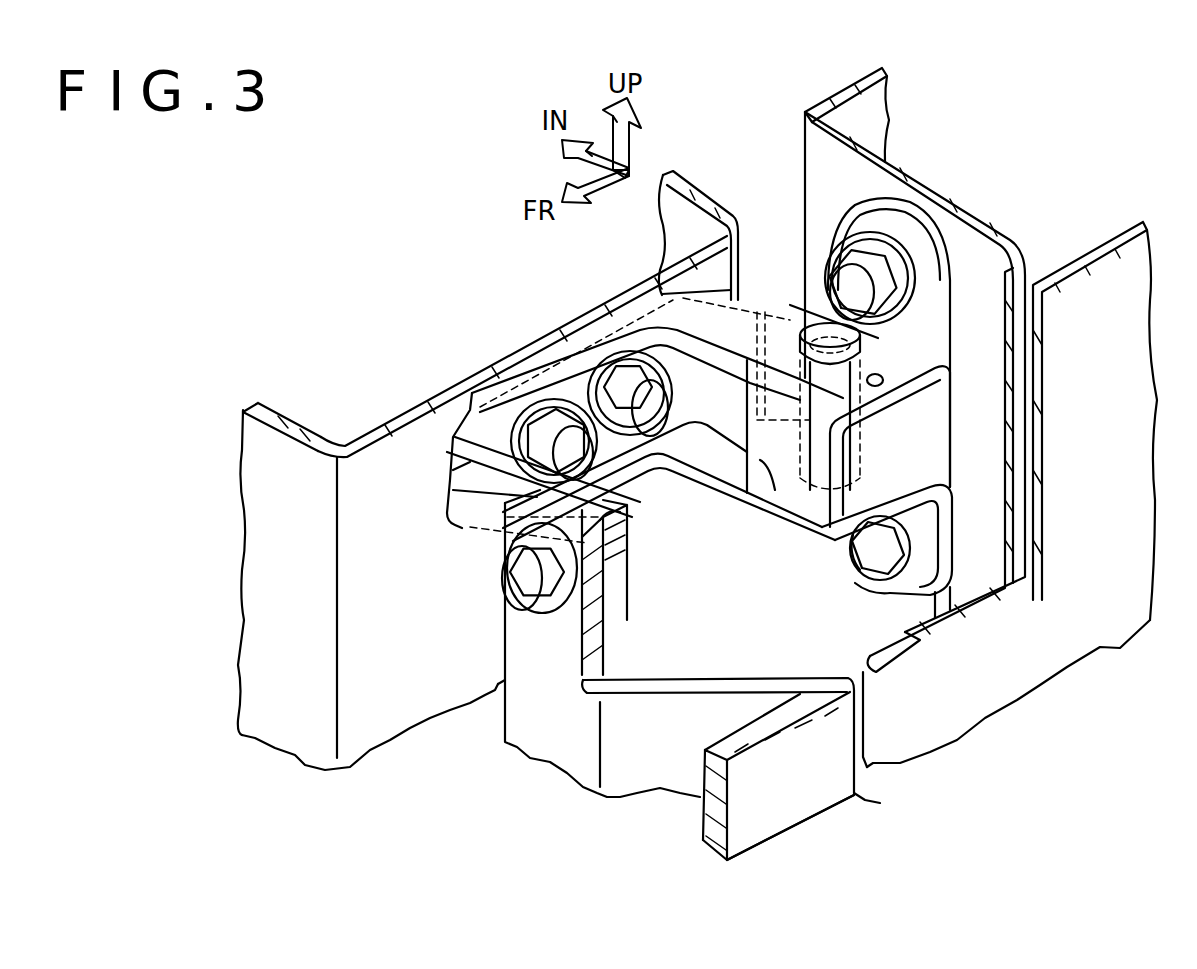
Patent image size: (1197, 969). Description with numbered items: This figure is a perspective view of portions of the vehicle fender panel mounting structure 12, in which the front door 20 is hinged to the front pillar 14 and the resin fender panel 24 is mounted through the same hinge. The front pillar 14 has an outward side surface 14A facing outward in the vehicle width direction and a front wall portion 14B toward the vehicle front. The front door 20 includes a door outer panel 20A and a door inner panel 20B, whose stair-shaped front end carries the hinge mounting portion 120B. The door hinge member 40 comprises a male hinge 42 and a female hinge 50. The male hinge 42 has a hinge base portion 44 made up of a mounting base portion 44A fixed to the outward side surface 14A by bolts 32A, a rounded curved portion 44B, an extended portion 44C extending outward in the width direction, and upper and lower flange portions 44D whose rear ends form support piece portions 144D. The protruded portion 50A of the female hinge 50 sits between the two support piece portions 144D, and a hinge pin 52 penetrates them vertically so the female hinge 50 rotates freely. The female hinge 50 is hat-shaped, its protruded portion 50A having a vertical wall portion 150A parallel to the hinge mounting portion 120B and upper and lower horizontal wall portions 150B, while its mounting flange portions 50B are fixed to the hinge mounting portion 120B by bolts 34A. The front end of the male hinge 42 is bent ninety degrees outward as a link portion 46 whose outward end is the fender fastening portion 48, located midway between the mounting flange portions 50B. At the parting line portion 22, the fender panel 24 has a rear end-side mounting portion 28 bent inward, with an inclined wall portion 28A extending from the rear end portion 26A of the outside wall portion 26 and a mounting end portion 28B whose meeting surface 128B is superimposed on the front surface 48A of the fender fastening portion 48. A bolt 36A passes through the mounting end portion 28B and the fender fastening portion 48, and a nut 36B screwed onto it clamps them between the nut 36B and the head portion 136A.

The vehicle fender panel mounting structure 12 is at (472, 776).
The front pillar 14 is at (255, 505).
The outward side surface 14A is at (397, 442).
The front wall portion 14B is at (262, 412).
The front door 20 is at (1100, 633).
The door outer panel 20A is at (1058, 650).
The door inner panel 20B is at (833, 102).
The parting line portion 22 is at (867, 777).
The fender panel 24 is at (807, 843).
The outside wall portion 26 is at (753, 827).
The rear end portion 26A is at (807, 797).
The rear end-side mounting portion 28 is at (732, 660).
The inclined wall portion 28A is at (700, 673).
The mounting end portion 28B is at (520, 642).
The bolts 32A is at (493, 390).
The bolts 34A is at (833, 263).
The bolt 36A is at (540, 622).
The nut 36B is at (607, 507).
The door hinge member 40 is at (745, 252).
The male hinge 42 is at (697, 545).
The hinge base portion 44 is at (577, 305).
The mounting base portion 44A is at (537, 350).
The curved portion 44B is at (668, 262).
The extended portion 44C is at (723, 403).
The flange portions 44D is at (722, 310).
The link portion 46 is at (485, 514).
The fender fastening portion 48 is at (623, 520).
The front surface 48A is at (643, 612).
The female hinge 50 is at (967, 503).
The protruded portion 50A is at (850, 560).
The mounting flange portions 50B is at (872, 225).
The hinge pin 52 is at (862, 332).
The hinge mounting portion 120B is at (965, 285).
The meeting surface 128B is at (468, 495).
The head portion 136A is at (495, 580).
The support piece portions 144D is at (868, 373).
The vertical wall portion 150A is at (775, 490).
The horizontal wall portions 150B is at (1008, 358).